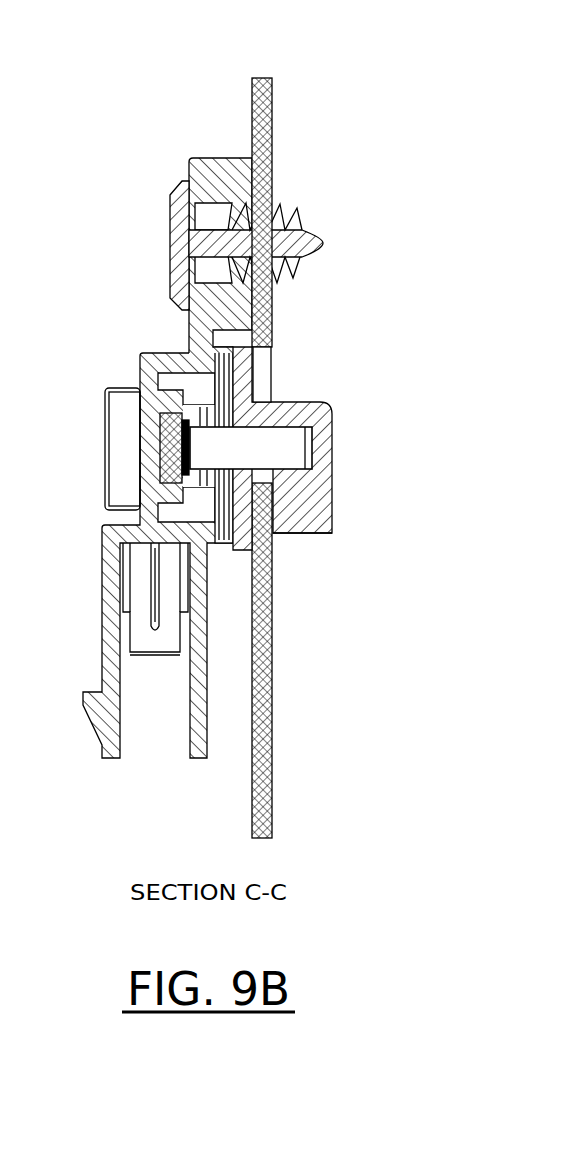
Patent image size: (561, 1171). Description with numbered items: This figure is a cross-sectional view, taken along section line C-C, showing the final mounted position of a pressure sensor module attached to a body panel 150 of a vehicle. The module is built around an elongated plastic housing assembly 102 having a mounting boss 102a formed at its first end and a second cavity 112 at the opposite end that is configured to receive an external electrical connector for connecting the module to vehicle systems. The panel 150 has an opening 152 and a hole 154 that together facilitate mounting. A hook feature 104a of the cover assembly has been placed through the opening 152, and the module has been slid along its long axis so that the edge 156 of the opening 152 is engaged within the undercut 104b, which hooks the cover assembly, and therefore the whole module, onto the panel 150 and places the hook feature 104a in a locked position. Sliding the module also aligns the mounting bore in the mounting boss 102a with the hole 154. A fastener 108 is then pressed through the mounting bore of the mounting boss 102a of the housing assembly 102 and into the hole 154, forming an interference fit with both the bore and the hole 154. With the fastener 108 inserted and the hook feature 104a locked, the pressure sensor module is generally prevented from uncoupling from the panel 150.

The housing assembly 102 is at (101, 587).
The mounting boss 102a is at (200, 156).
The hook feature 104a is at (333, 470).
The undercut 104b is at (275, 502).
The fastener 108 is at (169, 228).
The second cavity 112 is at (157, 735).
The panel 150 is at (273, 93).
The opening 152 is at (265, 356).
The hole 154 is at (273, 200).
The edge 156 is at (261, 483).